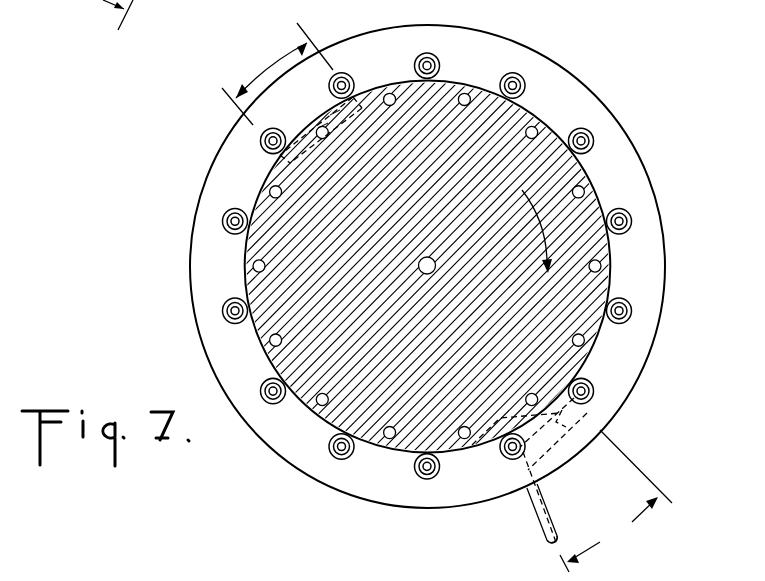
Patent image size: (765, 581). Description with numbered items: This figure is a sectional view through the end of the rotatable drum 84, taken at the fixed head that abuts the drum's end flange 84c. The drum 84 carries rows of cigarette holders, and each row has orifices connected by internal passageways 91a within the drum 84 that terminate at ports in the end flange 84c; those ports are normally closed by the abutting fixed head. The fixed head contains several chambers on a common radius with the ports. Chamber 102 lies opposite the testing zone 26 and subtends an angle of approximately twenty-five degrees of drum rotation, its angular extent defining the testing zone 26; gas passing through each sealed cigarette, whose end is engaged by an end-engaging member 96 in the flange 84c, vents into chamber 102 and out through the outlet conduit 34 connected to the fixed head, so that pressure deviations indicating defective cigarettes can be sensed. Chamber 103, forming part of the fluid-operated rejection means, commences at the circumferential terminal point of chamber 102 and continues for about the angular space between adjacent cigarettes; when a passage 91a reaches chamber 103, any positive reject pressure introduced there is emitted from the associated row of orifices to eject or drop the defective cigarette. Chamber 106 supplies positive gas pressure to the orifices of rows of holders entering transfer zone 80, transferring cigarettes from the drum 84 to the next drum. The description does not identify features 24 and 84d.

The direction of rotation arrow 24 is at (547, 223).
The testing zone 26 is at (616, 501).
The outlet conduit 34 is at (528, 505).
The transfer zone 80 is at (277, 74).
The rotatable drum 84 is at (382, 290).
The end flange 84c is at (618, 150).
The hatched disc plate 84d is at (587, 180).
The internal passageways 91a is at (582, 342).
The end-engaging member 96 is at (633, 310).
The chamber 102 is at (580, 413).
The chamber 103 is at (472, 445).
The chamber 106 is at (354, 96).